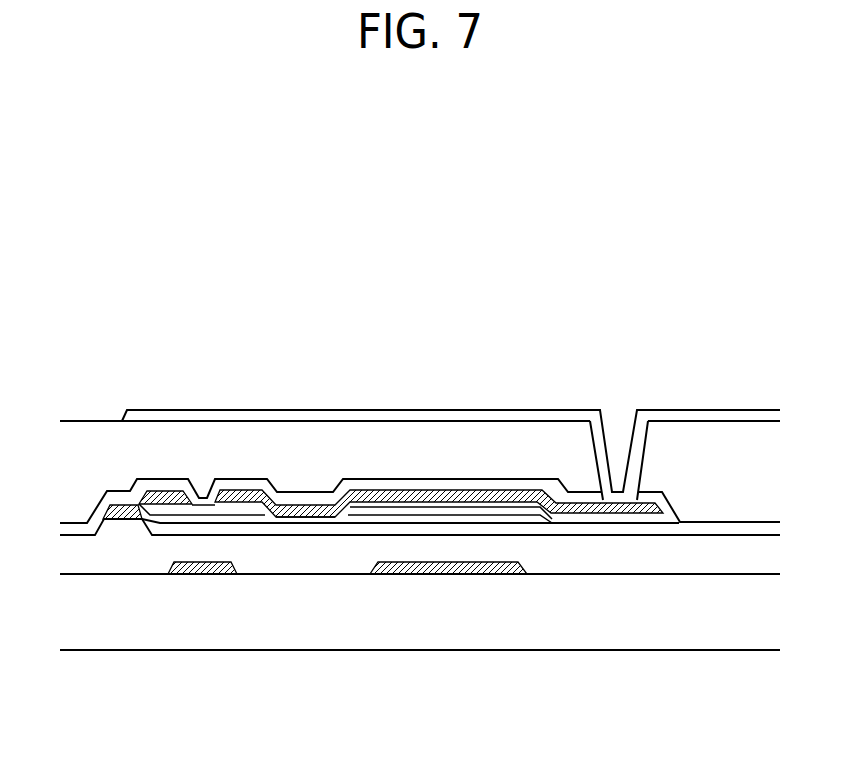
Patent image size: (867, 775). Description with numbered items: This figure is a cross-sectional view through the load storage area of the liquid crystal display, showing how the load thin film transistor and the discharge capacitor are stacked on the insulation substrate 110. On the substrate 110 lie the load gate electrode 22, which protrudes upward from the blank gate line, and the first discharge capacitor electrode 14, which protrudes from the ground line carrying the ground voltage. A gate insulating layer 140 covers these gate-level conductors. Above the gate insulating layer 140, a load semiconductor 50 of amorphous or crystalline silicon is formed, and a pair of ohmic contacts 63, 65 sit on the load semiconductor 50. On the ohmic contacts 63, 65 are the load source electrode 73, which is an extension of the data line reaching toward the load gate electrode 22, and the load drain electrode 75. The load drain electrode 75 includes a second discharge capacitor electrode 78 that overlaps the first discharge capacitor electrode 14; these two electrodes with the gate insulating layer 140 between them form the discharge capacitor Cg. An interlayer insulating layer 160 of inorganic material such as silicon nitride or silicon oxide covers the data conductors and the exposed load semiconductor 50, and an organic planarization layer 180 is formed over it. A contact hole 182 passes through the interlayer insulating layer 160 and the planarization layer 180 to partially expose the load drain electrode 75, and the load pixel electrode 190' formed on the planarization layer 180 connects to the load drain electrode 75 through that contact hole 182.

The insulation substrate 110 is at (720, 628).
The load gate electrode 22 is at (200, 567).
The first discharge capacitor electrode 14 is at (450, 565).
The gate insulating layer 140 is at (662, 556).
The interlayer insulating layer 160 is at (73, 527).
The load semiconductor 50 is at (275, 528).
The ohmic contact 63 is at (133, 522).
The ohmic contact 65 is at (326, 518).
The load source electrode 73 is at (158, 500).
The load drain electrode 75 is at (240, 492).
The second discharge capacitor electrode 78 is at (510, 503).
The planarization layer 180 is at (88, 450).
The contact hole 182 is at (596, 452).
The load pixel electrode 190' is at (451, 417).
The discharge capacitor Cg is at (517, 713).